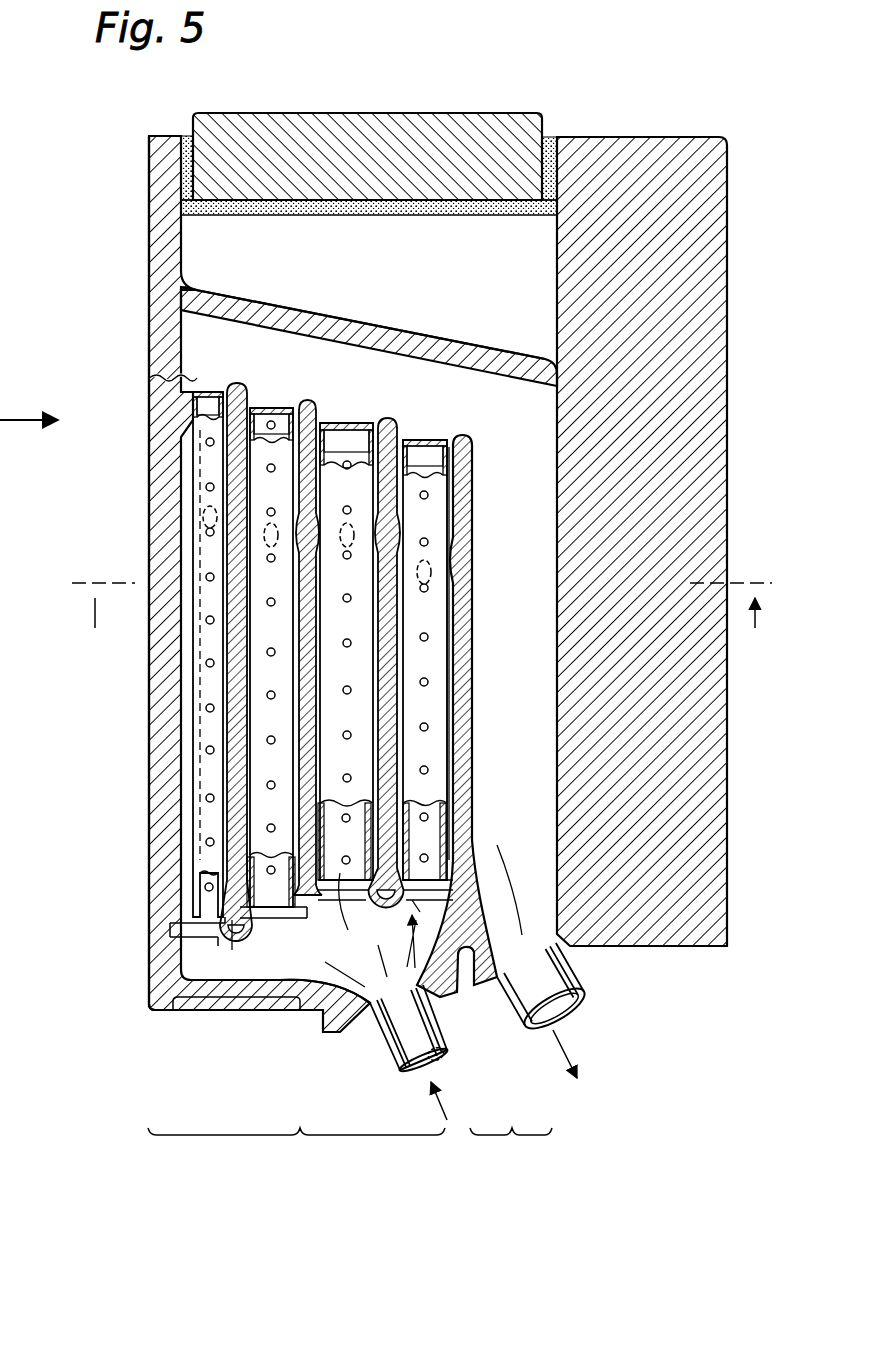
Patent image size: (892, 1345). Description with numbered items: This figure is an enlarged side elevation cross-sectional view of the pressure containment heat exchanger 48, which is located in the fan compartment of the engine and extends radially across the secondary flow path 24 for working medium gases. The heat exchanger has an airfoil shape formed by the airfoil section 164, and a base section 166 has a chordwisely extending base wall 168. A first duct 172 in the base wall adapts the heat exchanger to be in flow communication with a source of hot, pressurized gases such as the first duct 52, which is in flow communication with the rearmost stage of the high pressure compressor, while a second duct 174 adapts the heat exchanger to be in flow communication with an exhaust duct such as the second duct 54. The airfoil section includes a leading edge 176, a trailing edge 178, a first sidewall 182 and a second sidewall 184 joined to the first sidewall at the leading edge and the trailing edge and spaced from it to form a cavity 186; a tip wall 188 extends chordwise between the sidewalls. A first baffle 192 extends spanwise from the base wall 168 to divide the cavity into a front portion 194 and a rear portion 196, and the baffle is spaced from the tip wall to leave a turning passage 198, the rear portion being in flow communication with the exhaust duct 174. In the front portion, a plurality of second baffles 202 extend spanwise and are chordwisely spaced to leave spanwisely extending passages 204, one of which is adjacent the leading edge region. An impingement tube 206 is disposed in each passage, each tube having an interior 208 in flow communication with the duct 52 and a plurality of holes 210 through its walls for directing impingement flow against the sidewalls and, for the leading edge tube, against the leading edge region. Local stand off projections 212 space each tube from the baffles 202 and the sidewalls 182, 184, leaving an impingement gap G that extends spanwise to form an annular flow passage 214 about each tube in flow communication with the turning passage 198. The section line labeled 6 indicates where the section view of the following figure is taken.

The secondary flow path 24 is at (29, 404).
The heat exchanger 48 is at (115, 662).
The first duct 52 is at (407, 1047).
The second duct 54 is at (560, 985).
The section line 6- 6 is at (422, 591).
The airfoil section 164 is at (146, 455).
The base section 166 is at (150, 1007).
The base wall 168 is at (312, 1000).
The first duct 172 is at (323, 1032).
The second duct 174 is at (500, 947).
The leading edge 176 is at (150, 768).
The trailing edge 178 is at (727, 918).
The first sidewall 182 is at (232, 345).
The second sidewall 184 is at (155, 344).
The cavity 186 is at (285, 372).
The tip wall 188 is at (417, 343).
The first baffle 192 is at (462, 662).
The front portion 194 is at (296, 1154).
The rear portion 196 is at (511, 1154).
The turning passage 198 is at (358, 360).
The second baffles 202 is at (190, 388).
The passages 204 is at (187, 477).
The impingement tubes 206 is at (193, 420).
The interior 208 is at (430, 472).
The holes 210 is at (206, 843).
The stand off projections 212 is at (210, 518).
The annular flow passage 214 is at (452, 785).
The impingement gap G is at (440, 697).